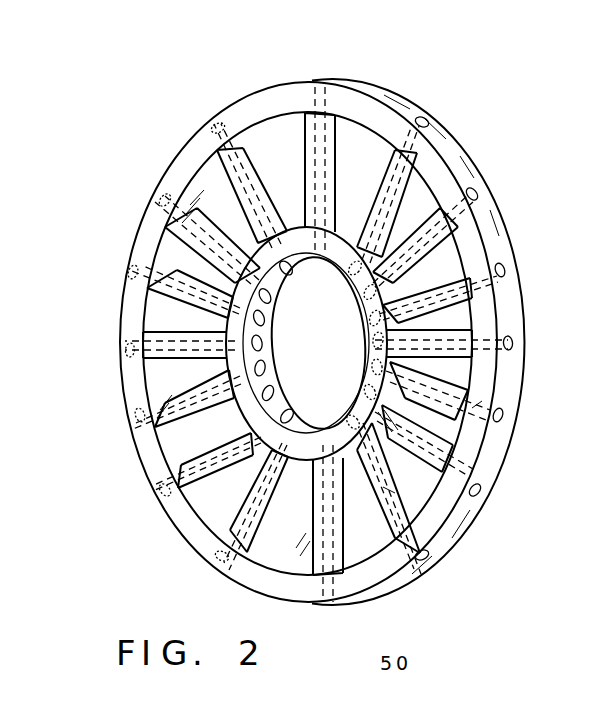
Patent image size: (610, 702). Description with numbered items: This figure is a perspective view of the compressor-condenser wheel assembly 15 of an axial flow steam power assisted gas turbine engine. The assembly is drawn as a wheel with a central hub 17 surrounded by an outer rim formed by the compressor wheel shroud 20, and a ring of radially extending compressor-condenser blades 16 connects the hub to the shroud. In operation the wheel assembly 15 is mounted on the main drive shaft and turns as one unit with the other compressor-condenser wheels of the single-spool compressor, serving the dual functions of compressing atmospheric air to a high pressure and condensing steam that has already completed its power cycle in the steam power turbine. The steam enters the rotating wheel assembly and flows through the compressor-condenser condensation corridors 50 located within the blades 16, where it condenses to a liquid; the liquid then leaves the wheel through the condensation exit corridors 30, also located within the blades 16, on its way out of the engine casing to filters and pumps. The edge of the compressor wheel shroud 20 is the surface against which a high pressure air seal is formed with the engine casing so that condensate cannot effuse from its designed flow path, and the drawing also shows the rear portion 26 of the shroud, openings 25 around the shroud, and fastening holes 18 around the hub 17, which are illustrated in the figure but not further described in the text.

The compressor-condenser wheel assembly 15 is at (278, 84).
The compressor-condenser blades 16 is at (407, 207).
The hub 17 is at (237, 320).
The hub bolt holes 18 is at (252, 405).
The compressor wheel shroud 20 is at (182, 172).
The rim holes 25 is at (425, 118).
The rim rear portion 26 is at (508, 388).
The condensation exit corridors 30 is at (490, 400).
The compressor-condenser condensation corridors 50 is at (480, 340).